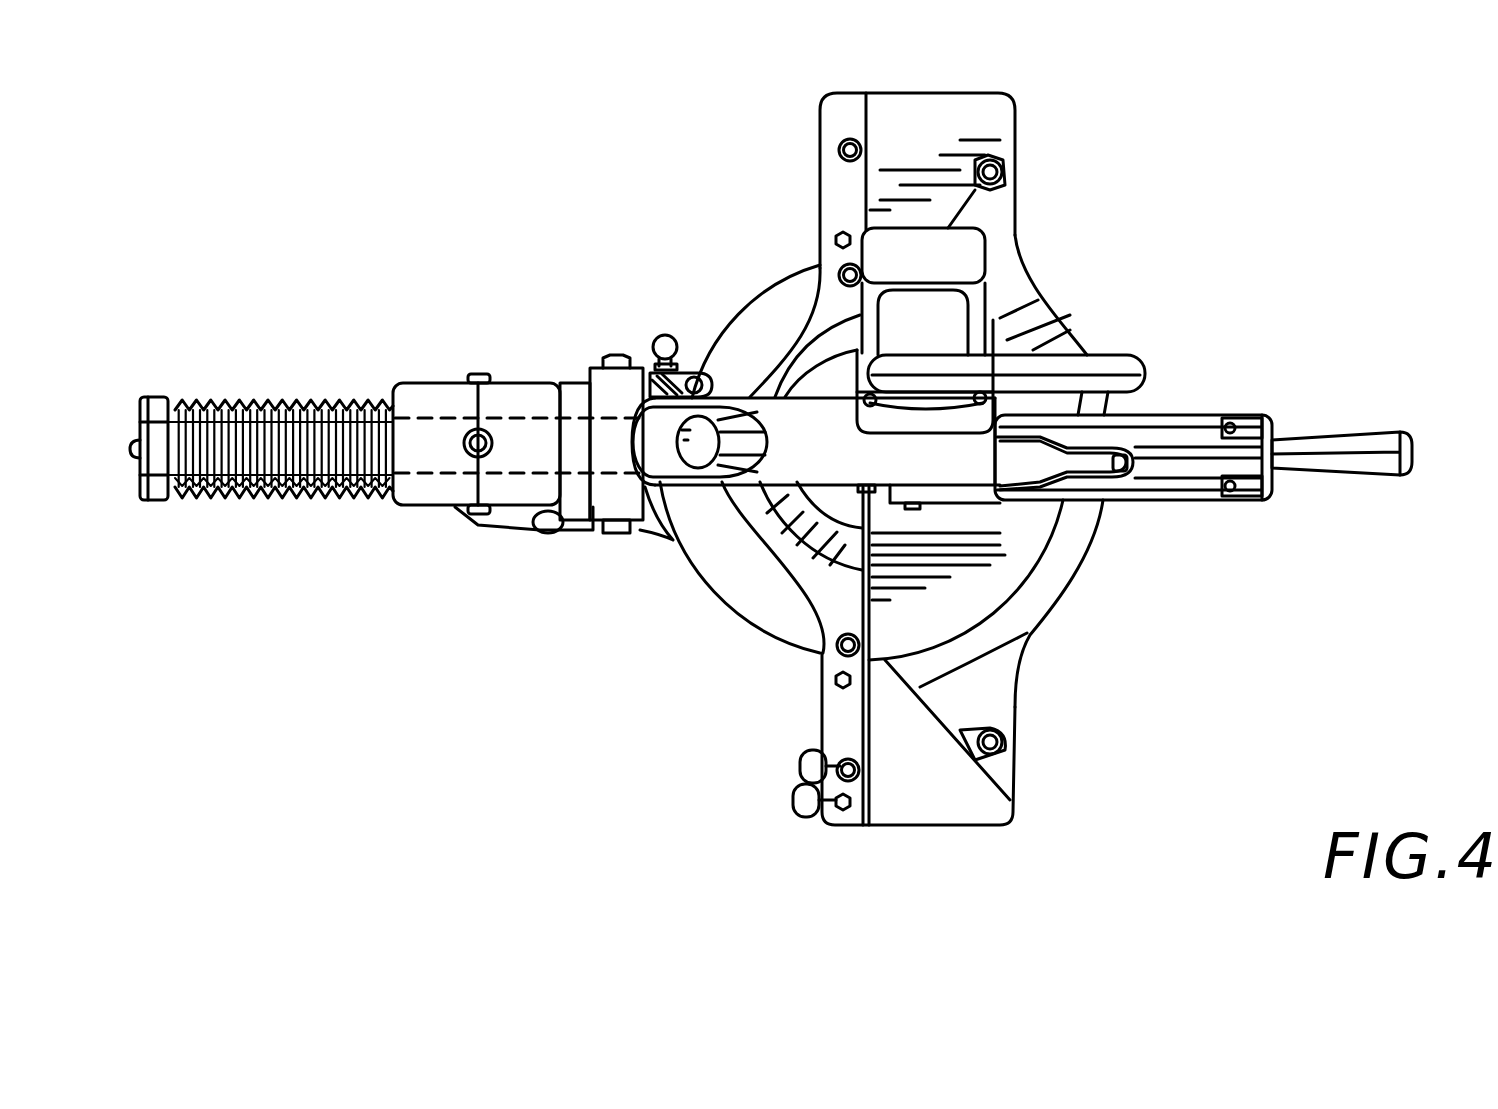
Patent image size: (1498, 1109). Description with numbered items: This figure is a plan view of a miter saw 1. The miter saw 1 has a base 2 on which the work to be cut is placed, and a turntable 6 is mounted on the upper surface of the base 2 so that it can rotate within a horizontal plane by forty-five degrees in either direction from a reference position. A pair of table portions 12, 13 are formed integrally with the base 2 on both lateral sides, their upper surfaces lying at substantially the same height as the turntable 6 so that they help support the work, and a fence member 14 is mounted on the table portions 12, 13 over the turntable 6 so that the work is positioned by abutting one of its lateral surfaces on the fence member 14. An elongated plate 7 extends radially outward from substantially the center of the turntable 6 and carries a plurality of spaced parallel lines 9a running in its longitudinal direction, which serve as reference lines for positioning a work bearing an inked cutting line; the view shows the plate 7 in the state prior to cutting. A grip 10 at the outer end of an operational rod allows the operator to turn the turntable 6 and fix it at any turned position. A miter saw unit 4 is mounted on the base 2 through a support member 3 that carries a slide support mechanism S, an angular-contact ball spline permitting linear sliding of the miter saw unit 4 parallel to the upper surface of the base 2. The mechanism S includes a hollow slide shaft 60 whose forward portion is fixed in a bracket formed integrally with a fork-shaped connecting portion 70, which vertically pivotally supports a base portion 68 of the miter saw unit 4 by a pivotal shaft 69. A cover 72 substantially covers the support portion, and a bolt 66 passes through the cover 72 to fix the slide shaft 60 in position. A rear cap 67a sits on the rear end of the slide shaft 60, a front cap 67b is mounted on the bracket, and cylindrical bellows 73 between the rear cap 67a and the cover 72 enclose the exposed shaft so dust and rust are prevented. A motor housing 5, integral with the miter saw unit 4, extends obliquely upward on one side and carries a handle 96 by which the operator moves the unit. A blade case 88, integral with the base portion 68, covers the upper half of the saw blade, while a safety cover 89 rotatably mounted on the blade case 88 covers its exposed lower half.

The miter saw 1 is at (680, 167).
The base 2 is at (1053, 577).
The support member 3 is at (490, 520).
The miter saw unit 4 is at (1018, 318).
The motor housing 5 is at (972, 255).
The turntable 6 is at (985, 592).
The elongated plate 7 is at (1165, 425).
The parallel lines 9a is at (1240, 418).
The grip 10 is at (1378, 440).
The table portion 12 is at (993, 152).
The table portion 13 is at (975, 805).
The fence member 14 is at (830, 712).
The slide shaft 60 is at (297, 468).
The bolt 66 is at (472, 430).
The rear cap 67a is at (155, 397).
The front cap 67b is at (572, 383).
The base portion 68 is at (625, 405).
The pivotal shaft 69 is at (617, 354).
The fork-shaped connecting portion 70 is at (597, 368).
The cover 72 is at (412, 395).
The bellows 73 is at (262, 400).
The blade case 88 is at (787, 493).
The safety cover 89 is at (1040, 505).
The handle 96 is at (1115, 360).
The slide support mechanism S is at (400, 543).